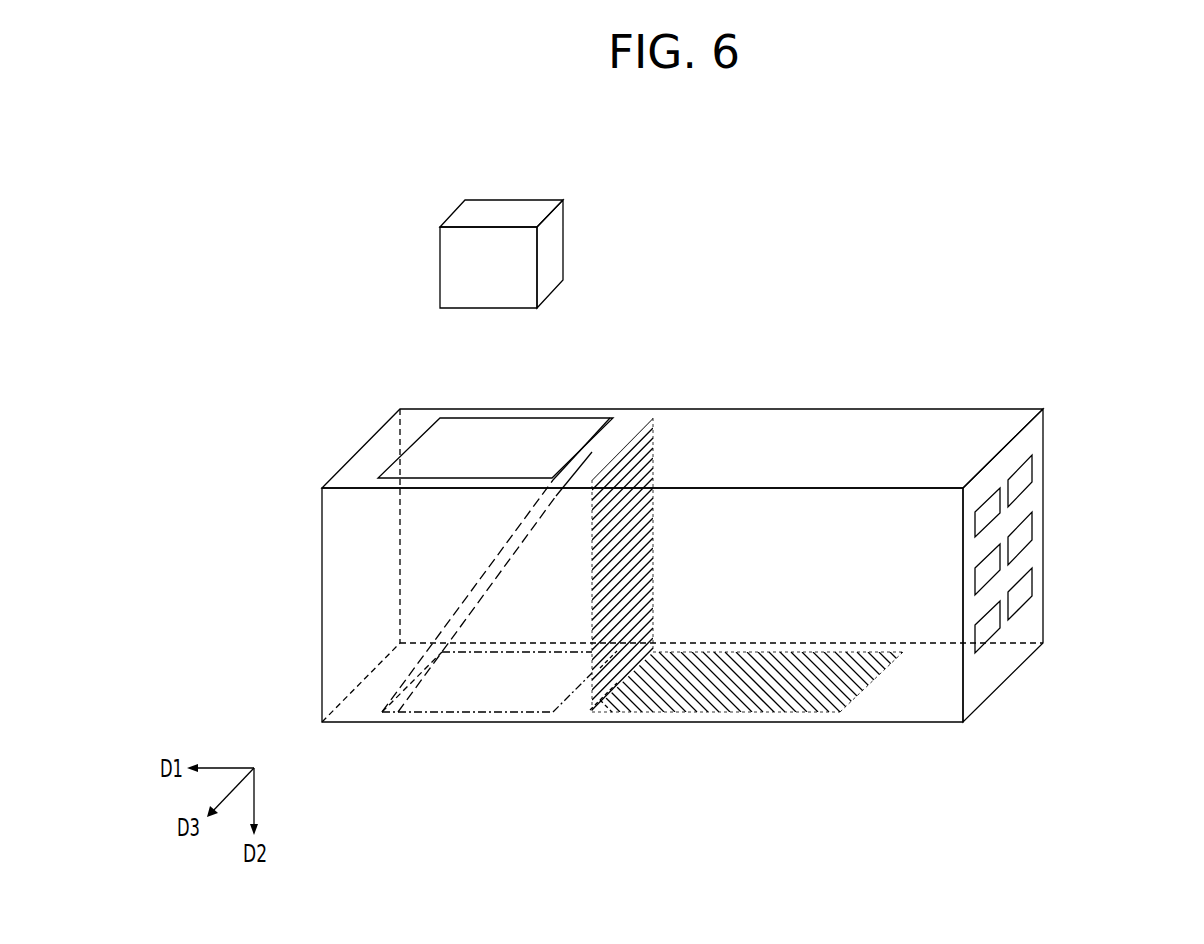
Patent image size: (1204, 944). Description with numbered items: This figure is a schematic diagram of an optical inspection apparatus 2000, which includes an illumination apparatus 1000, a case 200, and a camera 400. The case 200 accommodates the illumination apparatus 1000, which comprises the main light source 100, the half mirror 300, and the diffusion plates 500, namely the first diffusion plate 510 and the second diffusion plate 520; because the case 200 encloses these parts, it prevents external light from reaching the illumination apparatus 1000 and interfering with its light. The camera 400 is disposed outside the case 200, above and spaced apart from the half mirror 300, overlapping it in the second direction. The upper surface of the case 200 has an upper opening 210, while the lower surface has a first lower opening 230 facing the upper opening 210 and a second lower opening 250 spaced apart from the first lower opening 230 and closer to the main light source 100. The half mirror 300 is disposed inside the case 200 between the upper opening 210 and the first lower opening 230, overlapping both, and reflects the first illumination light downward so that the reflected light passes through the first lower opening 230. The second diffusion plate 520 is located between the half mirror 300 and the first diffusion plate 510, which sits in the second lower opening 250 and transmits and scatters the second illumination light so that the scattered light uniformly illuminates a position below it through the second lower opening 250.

The main light source 100 is at (1029, 584).
The case 200 is at (978, 422).
The upper opening 210 is at (509, 445).
The first lower opening 230 is at (474, 692).
The second lower opening 250 is at (661, 692).
The half mirror 300 is at (482, 577).
The camera 400 is at (553, 272).
The diffusion plates 500 is at (760, 619).
The first diffusion plate 510 is at (790, 693).
The second diffusion plate 520 is at (643, 572).
The illumination apparatus 1000 is at (1042, 563).
The optical inspection apparatus 2000 is at (1114, 263).